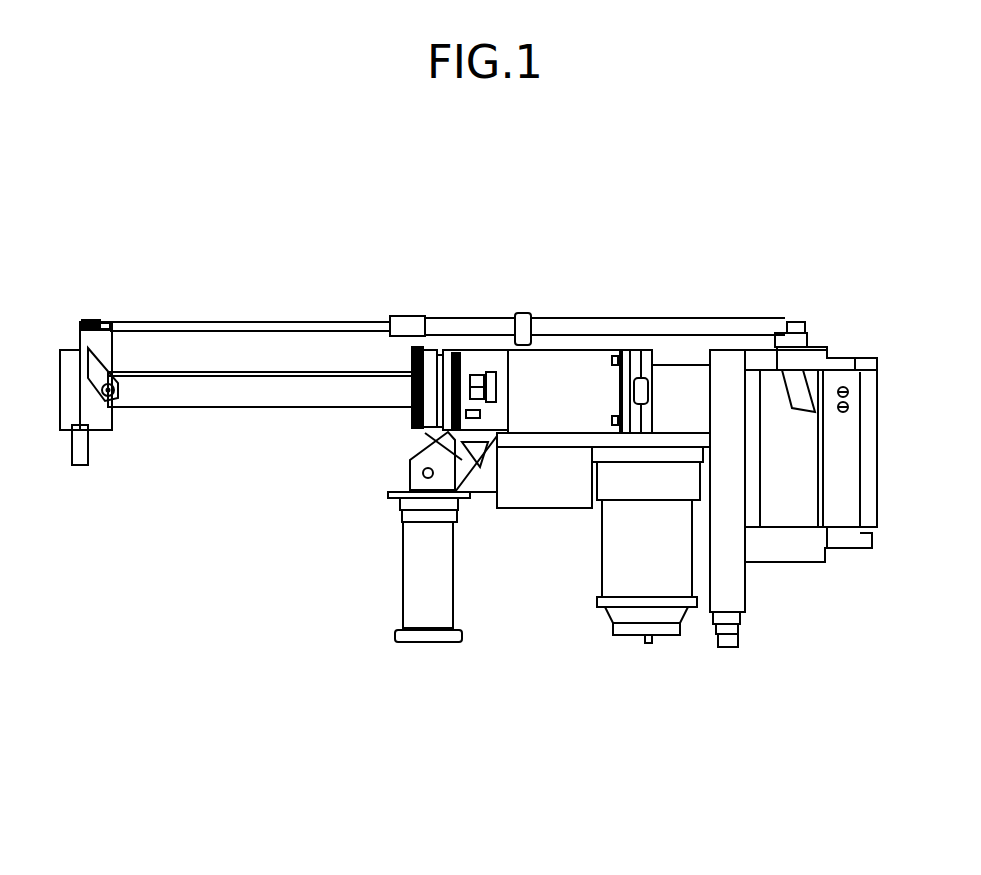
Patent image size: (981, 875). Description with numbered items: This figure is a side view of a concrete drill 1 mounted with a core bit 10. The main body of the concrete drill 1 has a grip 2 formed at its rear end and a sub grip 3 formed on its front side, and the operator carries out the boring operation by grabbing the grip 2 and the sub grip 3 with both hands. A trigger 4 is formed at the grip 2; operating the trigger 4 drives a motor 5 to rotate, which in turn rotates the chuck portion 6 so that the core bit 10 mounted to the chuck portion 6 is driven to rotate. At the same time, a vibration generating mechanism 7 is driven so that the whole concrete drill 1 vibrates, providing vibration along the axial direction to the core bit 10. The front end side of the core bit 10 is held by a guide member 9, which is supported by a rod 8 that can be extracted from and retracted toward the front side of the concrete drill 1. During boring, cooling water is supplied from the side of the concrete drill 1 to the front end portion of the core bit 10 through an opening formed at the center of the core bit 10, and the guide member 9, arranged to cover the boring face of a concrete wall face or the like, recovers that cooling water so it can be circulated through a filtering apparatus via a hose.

The concrete drill 1 is at (668, 280).
The grip 2 is at (880, 502).
The sub grip 3 is at (400, 590).
The trigger 4 is at (776, 320).
The motor 5 is at (617, 632).
The chuck portion 6 is at (424, 318).
The vibration generating mechanism 7 is at (552, 510).
The rod 8 is at (285, 322).
The guide member 9 is at (92, 430).
The core bit 10 is at (287, 408).